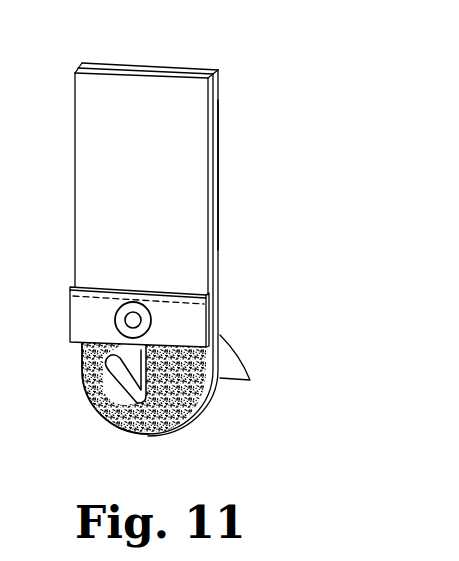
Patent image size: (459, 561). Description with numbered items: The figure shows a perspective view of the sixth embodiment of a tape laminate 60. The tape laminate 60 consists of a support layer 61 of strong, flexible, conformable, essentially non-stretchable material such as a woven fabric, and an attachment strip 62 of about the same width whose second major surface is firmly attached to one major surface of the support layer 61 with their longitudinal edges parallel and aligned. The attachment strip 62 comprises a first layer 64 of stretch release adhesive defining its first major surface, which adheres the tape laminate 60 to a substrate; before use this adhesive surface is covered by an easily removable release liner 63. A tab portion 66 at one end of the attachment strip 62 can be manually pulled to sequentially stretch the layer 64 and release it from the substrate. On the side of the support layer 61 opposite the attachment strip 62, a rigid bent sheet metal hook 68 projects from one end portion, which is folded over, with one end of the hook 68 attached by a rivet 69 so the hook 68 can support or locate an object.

The tape laminate 60 is at (266, 89).
The support layer 61 is at (154, 200).
The attachment strip 62 is at (218, 222).
The release liner 63 is at (232, 371).
The first layer of stretch release adhesive 64 is at (218, 173).
The tab portion 66 is at (178, 425).
The hook 68 is at (107, 386).
The rivet 69 is at (152, 317).